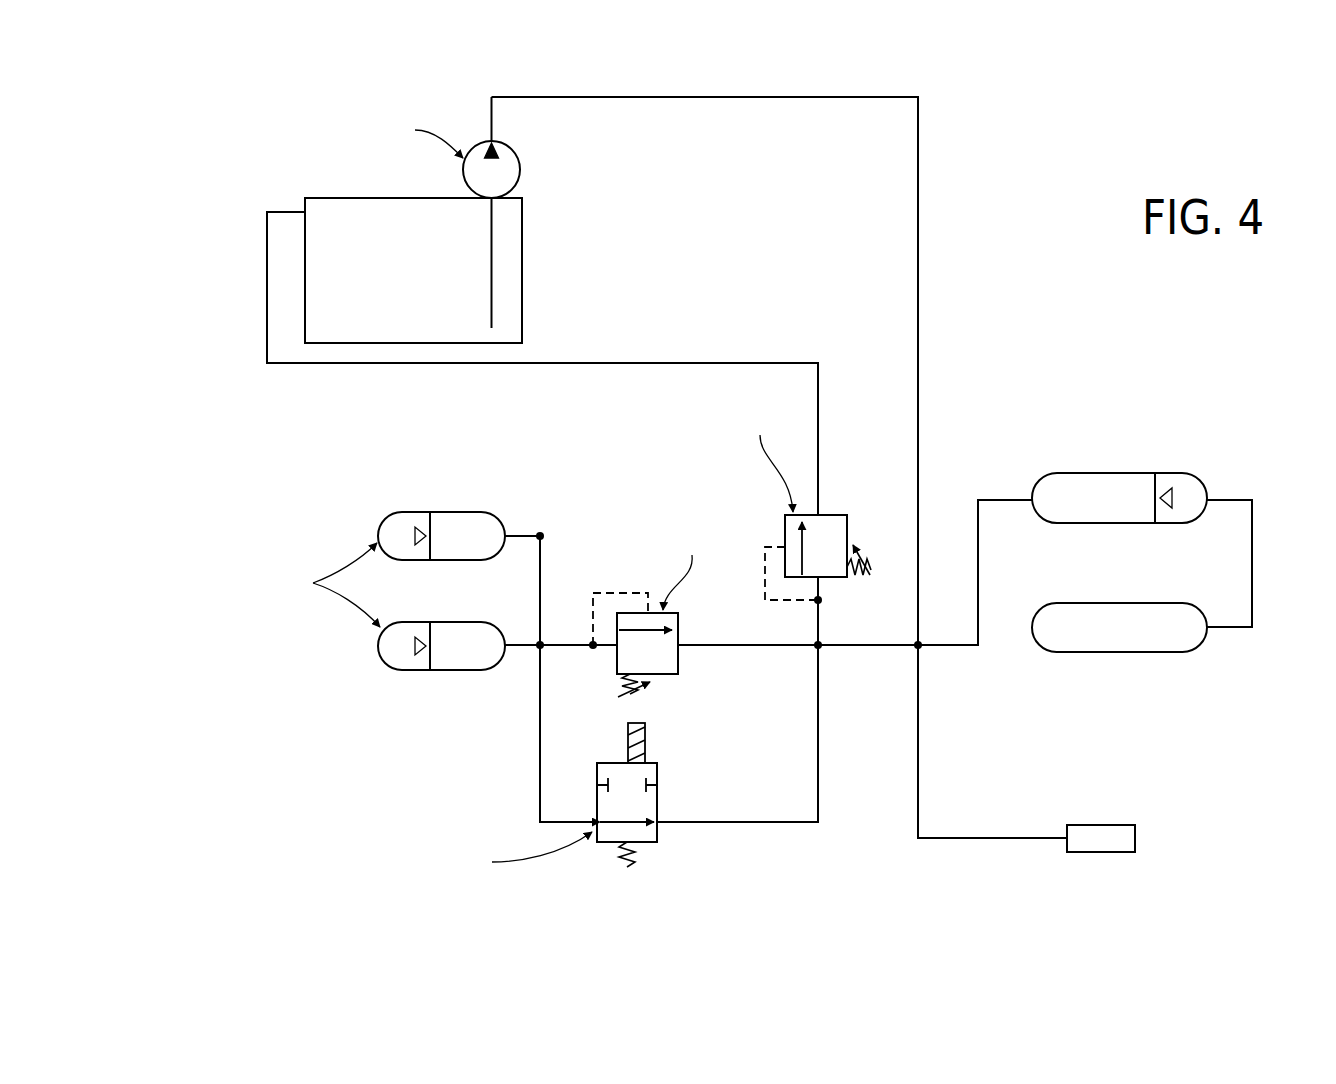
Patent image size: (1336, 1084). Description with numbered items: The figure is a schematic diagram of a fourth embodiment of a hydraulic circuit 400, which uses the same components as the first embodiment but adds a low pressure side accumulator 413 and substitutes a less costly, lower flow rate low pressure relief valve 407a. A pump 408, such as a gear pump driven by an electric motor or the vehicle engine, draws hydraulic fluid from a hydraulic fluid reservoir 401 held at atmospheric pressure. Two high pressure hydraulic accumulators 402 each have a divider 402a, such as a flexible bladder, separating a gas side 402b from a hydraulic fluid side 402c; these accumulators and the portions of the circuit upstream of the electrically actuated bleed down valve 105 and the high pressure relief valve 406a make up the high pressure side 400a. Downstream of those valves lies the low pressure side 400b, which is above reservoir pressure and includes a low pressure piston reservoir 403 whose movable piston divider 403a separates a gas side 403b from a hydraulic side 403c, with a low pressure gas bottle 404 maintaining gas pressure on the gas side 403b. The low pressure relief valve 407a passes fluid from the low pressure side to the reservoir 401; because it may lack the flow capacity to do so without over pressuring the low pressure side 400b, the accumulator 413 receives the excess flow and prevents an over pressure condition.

The hydraulic circuit 400 is at (1017, 188).
The high pressure side 400a is at (403, 705).
The low pressure side 400b is at (790, 902).
The hydraulic fluid reservoir 401 is at (507, 283).
The high pressure hydraulic accumulator 402 is at (403, 512).
The divider 402a is at (430, 512).
The gas side 402b is at (388, 527).
The hydraulic fluid side 402c is at (482, 550).
The low pressure piston reservoir 403 is at (1207, 488).
The divider 403a is at (1155, 523).
The gas side 403b is at (1197, 510).
The hydraulic side 403c is at (1047, 508).
The low pressure gas bottle 404 is at (1197, 643).
The high pressure relief valve 406a is at (678, 660).
The low pressure relief valve 407a is at (837, 577).
The pump 408 is at (520, 158).
The bleed down valve 105 is at (660, 778).
The low pressure side accumulator 413 is at (1112, 825).